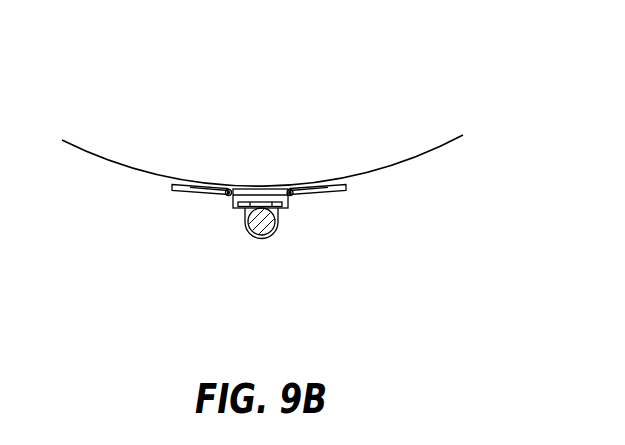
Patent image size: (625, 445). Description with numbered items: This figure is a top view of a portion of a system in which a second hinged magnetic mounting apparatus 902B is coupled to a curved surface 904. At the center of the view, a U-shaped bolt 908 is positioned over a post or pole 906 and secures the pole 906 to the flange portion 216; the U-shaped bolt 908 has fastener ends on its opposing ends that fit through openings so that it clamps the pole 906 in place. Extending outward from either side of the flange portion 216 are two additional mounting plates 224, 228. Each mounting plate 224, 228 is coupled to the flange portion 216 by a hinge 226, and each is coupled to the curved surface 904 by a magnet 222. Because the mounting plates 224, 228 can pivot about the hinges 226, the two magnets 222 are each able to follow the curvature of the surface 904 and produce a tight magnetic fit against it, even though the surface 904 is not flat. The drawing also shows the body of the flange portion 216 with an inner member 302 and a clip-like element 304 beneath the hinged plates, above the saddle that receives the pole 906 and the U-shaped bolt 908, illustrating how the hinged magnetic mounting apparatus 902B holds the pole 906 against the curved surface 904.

The curved surface 904 is at (105, 158).
The second hinged magnetic mounting apparatus 902B is at (292, 157).
The magnets 222 is at (203, 185).
The mounting plate 224 is at (256, 177).
The mounting plate 228 is at (256, 177).
The hinges 226 is at (228, 190).
The flange portion 216 is at (276, 168).
The bracket body 302 is at (236, 205).
The clip 304 is at (241, 204).
The pole 906 is at (254, 240).
The U-shaped bolt 908 is at (263, 240).